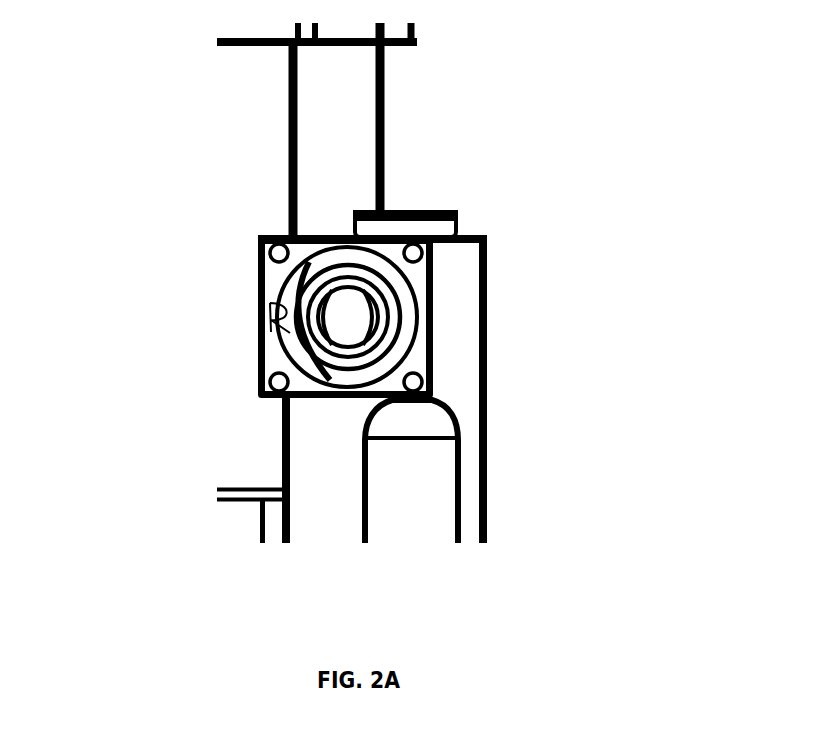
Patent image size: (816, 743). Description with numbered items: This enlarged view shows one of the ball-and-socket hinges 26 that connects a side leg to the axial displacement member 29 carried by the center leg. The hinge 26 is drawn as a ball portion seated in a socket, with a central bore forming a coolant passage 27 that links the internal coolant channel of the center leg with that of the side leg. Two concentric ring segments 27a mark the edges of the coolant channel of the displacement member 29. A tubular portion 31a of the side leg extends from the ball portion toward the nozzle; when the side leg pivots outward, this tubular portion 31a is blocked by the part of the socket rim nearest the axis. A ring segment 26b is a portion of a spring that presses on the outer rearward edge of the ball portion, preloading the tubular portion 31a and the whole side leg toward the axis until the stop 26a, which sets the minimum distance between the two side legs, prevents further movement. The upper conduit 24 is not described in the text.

The inlet conduit 24 is at (385, 143).
The hinge 26 is at (390, 296).
The stop 26a is at (283, 297).
The spring 26b is at (352, 340).
The coolant passage 27 is at (355, 315).
The ring segments 27a is at (302, 294).
The axial displacement member 29 is at (487, 477).
The tubular portion 31a is at (362, 335).